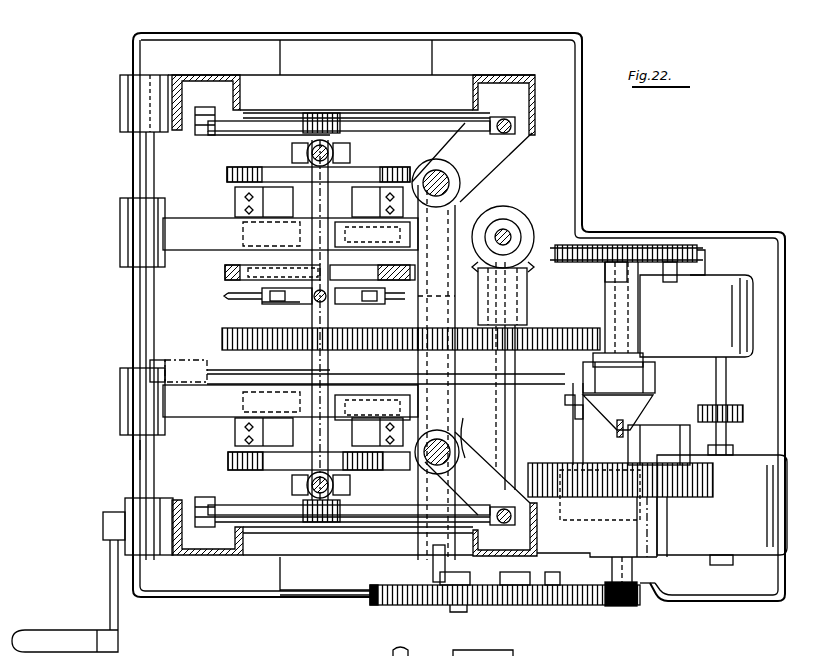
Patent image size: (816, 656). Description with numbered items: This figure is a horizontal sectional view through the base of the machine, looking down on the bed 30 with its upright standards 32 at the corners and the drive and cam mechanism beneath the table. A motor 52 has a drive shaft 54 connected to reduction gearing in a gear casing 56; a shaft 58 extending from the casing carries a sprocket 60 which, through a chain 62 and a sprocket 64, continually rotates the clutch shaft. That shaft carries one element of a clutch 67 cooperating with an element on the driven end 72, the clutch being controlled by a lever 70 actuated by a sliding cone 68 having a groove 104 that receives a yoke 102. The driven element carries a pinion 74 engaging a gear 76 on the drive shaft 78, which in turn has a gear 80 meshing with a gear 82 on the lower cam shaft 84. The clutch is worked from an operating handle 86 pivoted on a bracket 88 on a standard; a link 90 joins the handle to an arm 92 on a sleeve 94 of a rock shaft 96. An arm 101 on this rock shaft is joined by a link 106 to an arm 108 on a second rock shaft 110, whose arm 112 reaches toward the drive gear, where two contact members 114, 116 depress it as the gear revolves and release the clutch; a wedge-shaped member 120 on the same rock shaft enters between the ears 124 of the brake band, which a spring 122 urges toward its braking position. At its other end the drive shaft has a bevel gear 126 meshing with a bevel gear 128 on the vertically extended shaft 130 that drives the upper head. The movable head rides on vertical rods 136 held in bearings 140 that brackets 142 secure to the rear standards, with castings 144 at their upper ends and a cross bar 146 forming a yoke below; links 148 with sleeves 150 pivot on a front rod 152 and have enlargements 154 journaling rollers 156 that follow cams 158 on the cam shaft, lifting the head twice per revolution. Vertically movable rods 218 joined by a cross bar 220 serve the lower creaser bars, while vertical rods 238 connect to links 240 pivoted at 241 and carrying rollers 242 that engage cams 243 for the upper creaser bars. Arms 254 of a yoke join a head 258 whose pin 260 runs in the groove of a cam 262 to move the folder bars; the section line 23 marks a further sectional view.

The section line 23 is at (439, 23).
The bed 30 is at (576, 159).
The standards 32 is at (522, 76).
The motor 52 is at (746, 462).
The drive shaft 54 is at (728, 390).
The gear casing 56 is at (735, 290).
The shaft 58 is at (692, 270).
The sprocket 60 is at (700, 257).
The chain 62 is at (650, 245).
The sprocket 64 is at (600, 245).
The clutch 67 is at (696, 498).
The cone 68 is at (656, 389).
The lever 70 is at (614, 436).
The driven end 72 is at (633, 571).
The pinion 74 is at (652, 590).
The gear 76 is at (530, 607).
The drive shaft 78 is at (516, 434).
The gear 80 is at (557, 327).
The gear 82 is at (368, 350).
The lower cam shaft 84 is at (292, 524).
The operating handle 86 is at (110, 583).
The bracket 88 is at (125, 548).
The link 90 is at (140, 452).
The arm 92 is at (160, 358).
The sleeve 94 is at (185, 360).
The rock shaft 96 is at (230, 386).
The arm 101 is at (565, 400).
The yoke 102 is at (640, 356).
The groove 104 is at (575, 412).
The link 106 is at (573, 452).
The arm 108 is at (540, 522).
The rock shaft 110 is at (472, 438).
The arm 112 is at (432, 565).
The contact member 114 is at (458, 606).
The contact member 116 is at (612, 606).
The wedge-shaped member 120 is at (668, 525).
The spring 122 is at (578, 510).
The ears 124 is at (659, 445).
The bevel gear 126 is at (530, 262).
The bevel gear 128 is at (520, 213).
The vertically extended shaft 130 is at (503, 229).
The vertical rods 136 is at (441, 174).
The bearings 140 is at (412, 178).
The brackets 142 is at (495, 163).
The castings 144 is at (418, 270).
The cross bar 146 is at (425, 302).
The links 148 is at (198, 217).
The sleeves 150 is at (120, 228).
The rod 152 is at (140, 313).
The enlargements 154 is at (305, 213).
The rollers 156 is at (343, 233).
The cams 158 is at (242, 234).
The vertically movable rods 218 is at (306, 153).
The cross bar 220 is at (312, 312).
The vertical rods 238 is at (514, 121).
The links 240 is at (277, 122).
The pivot 241 is at (197, 130).
The rollers 242 is at (345, 115).
The cams 243 is at (257, 112).
The arms 254 is at (228, 296).
The head 258 is at (265, 303).
The pin 260 is at (300, 268).
The cam 262 is at (232, 267).